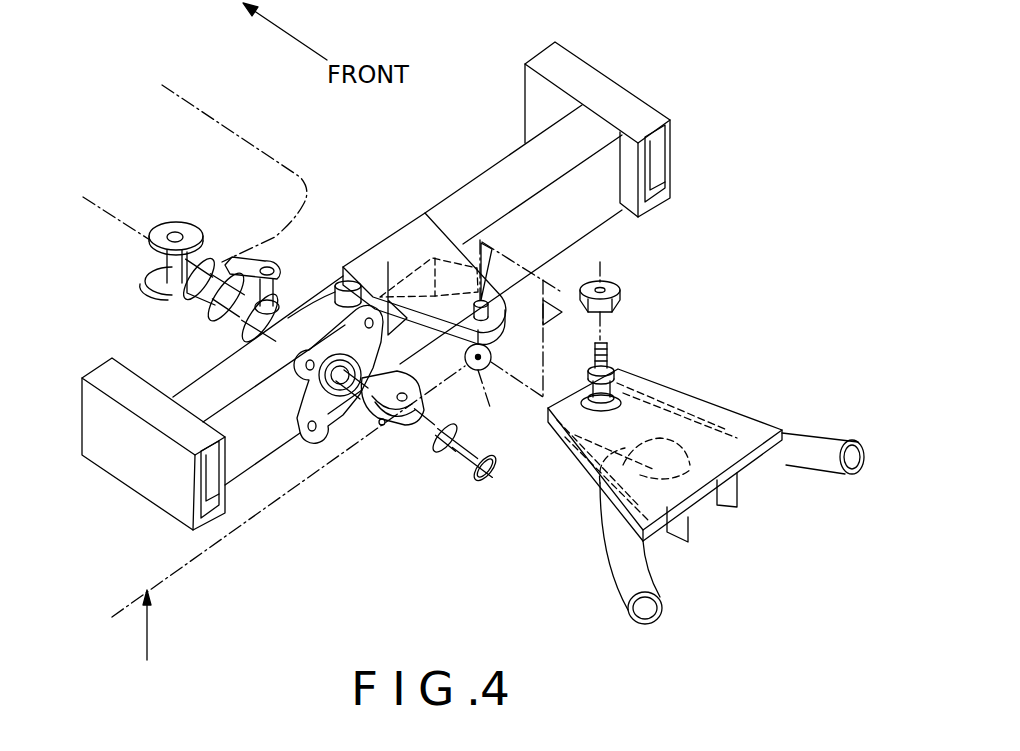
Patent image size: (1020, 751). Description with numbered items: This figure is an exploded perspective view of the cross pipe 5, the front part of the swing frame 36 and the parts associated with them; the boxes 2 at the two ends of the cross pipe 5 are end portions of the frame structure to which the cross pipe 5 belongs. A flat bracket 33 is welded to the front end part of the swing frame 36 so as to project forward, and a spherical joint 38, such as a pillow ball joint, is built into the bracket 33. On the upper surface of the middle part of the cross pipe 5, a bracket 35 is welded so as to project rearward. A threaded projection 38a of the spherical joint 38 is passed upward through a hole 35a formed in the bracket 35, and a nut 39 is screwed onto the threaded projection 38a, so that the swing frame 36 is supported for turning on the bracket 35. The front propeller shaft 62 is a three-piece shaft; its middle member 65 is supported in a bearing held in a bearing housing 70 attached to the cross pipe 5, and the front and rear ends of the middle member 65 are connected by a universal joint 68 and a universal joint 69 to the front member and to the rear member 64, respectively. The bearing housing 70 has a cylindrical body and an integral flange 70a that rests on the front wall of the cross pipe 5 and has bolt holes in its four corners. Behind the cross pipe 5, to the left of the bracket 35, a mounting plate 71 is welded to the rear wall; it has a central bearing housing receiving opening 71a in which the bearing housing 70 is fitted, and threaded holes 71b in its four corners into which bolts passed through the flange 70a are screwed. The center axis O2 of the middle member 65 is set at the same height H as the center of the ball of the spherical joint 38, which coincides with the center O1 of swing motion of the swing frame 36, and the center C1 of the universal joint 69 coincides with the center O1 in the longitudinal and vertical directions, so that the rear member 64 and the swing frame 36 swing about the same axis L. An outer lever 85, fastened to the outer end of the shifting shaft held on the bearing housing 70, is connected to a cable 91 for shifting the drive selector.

The frame cross member 2 is at (630, 100).
The cross pipe 5 is at (503, 180).
The flat bracket 33 is at (727, 410).
The bracket 35 is at (438, 230).
The hole 35a is at (481, 300).
The swing frame 36 is at (647, 578).
The spherical joint 38 is at (618, 393).
The threaded projection 38a is at (604, 343).
The nut 39 is at (612, 282).
The front propeller shaft 62 is at (482, 489).
The rear member 64 is at (488, 478).
The middle member 65 is at (207, 315).
The universal joint 68 is at (148, 243).
The universal joint 69 is at (391, 451).
The bearing housing 70 is at (233, 330).
The flange 70a is at (323, 273).
The mounting plate 71 is at (311, 434).
The bearing housing receiving opening 71a is at (306, 430).
The threaded holes 71b is at (300, 438).
The outer lever 85 is at (303, 248).
The cable 91 is at (242, 137).
The center of swing motion O1 is at (488, 348).
The center axis of the middle member O2 is at (112, 214).
The center of the universal joint C1 is at (403, 416).
The axis L is at (207, 557).
The height H is at (160, 625).